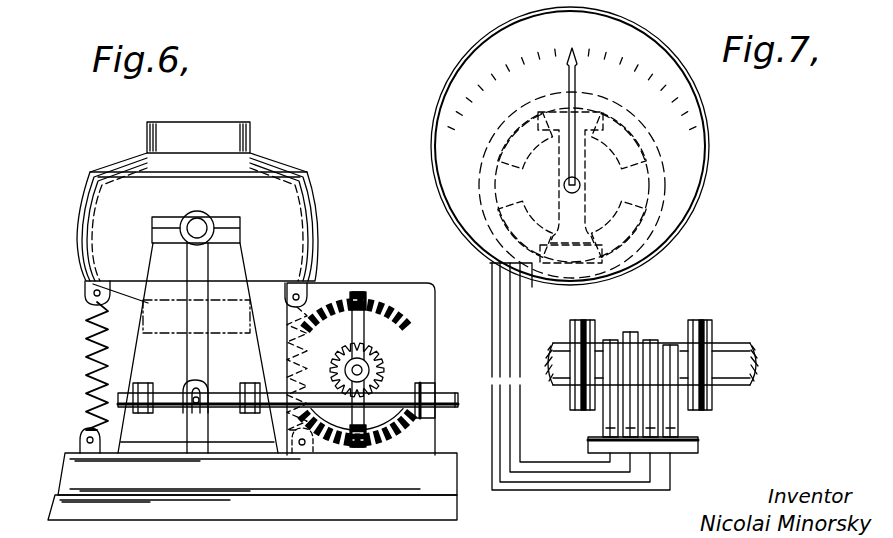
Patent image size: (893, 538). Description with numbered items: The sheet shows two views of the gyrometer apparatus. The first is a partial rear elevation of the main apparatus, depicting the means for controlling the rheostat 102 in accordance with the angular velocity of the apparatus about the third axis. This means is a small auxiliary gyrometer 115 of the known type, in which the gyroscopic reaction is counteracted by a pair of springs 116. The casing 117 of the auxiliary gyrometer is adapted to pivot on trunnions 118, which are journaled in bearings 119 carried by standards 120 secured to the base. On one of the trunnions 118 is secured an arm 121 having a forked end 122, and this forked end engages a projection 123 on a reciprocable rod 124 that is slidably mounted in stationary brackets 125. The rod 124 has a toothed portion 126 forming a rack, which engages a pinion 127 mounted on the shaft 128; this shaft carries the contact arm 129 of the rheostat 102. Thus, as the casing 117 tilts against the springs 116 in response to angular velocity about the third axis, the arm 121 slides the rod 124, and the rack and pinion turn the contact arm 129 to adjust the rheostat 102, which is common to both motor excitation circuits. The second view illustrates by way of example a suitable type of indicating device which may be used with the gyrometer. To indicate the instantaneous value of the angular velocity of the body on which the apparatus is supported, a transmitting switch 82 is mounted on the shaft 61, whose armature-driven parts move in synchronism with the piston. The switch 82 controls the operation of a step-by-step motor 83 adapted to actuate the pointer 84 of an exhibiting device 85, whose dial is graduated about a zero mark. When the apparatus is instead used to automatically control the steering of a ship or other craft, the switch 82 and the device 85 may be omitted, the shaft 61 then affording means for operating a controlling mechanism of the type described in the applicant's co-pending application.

In FIG. 6, the auxiliary gyrometer 115 is at (181, 201).
In FIG. 6, the springs 116 is at (88, 332).
In FIG. 6, the casing 117 is at (278, 184).
In FIG. 6, the trunnions 118 is at (195, 221).
In FIG. 6, the bearings 119 is at (153, 234).
In FIG. 6, the standards 120 is at (158, 430).
In FIG. 6, the arm 121 is at (210, 274).
In FIG. 6, the forked end 122 is at (207, 385).
In FIG. 6, the projection 123 is at (205, 409).
In FIG. 6, the reciprocable rod 124 is at (223, 409).
In FIG. 6, the stationary brackets 125 is at (144, 383).
In FIG. 6, the toothed portion 126 is at (383, 395).
In FIG. 6, the pinion 127 is at (398, 360).
In FIG. 6, the shaft 128 is at (344, 372).
In FIG. 6, the contact arm 129 is at (352, 330).
In FIG. 6, the rheostat 102 is at (425, 266).
In FIG. 7, the shaft 61 is at (748, 352).
In FIG. 7, the transmitting switch 82 is at (652, 348).
In FIG. 7, the step-by-step motor 83 is at (652, 208).
In FIG. 7, the pointer 84 is at (582, 126).
In FIG. 7, the exhibiting device 85 is at (709, 156).